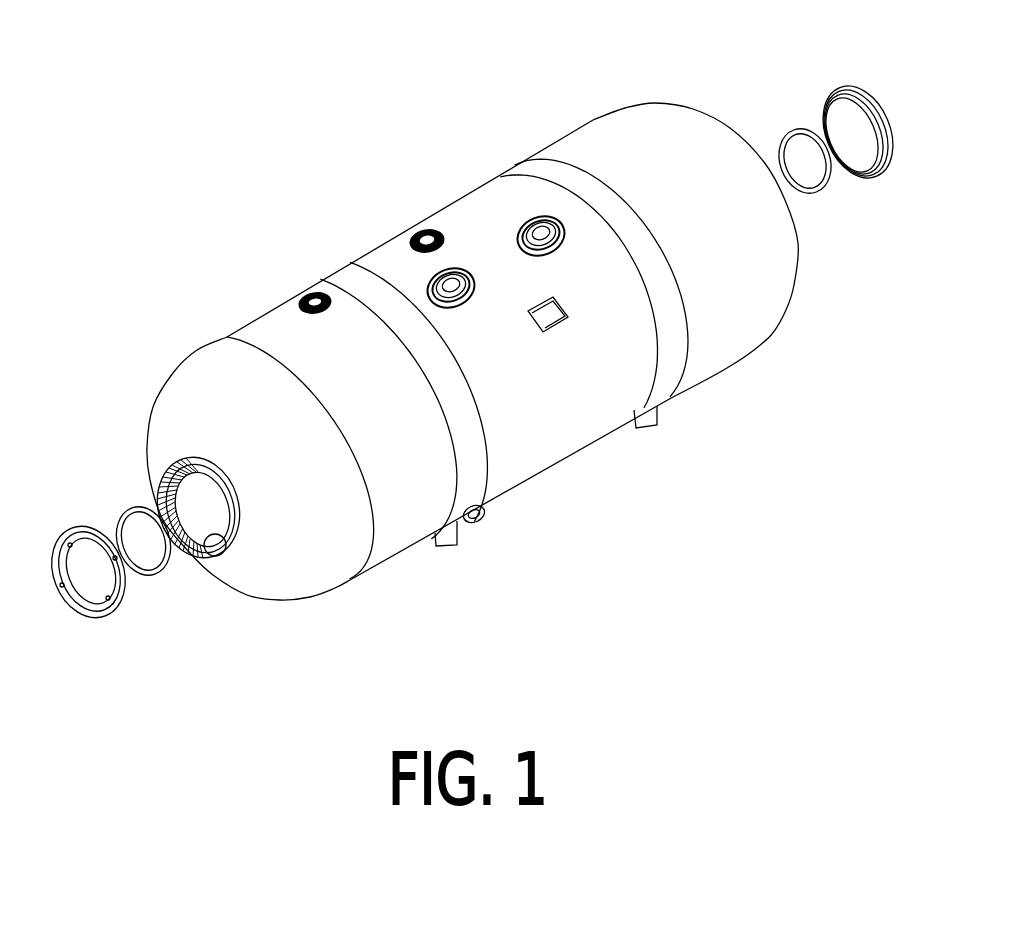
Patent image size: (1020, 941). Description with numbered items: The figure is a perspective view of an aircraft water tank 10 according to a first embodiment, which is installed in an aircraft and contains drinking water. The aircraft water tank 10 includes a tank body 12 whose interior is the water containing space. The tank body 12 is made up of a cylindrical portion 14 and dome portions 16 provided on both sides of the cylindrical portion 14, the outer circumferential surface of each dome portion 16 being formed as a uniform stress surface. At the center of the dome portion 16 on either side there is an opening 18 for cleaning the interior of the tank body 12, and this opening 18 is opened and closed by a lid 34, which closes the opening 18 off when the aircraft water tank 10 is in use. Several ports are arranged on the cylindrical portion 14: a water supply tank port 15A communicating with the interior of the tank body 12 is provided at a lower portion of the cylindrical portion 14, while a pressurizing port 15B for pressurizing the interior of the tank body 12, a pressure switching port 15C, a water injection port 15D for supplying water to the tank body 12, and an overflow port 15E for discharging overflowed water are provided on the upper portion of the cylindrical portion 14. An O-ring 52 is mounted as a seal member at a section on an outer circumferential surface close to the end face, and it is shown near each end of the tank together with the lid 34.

The aircraft water tank 10 is at (268, 171).
The tank body 12 is at (597, 135).
The cylindrical portion 14 is at (482, 243).
The water supply tank port 15A is at (484, 518).
The pressurizing port 15B is at (305, 298).
The pressure switching port 15C is at (420, 233).
The water injection port 15D is at (473, 297).
The overflow port 15E is at (530, 222).
The dome portion 16 is at (195, 402).
The opening 18 is at (200, 557).
The lid 34 is at (87, 570).
The O-ring 52 is at (147, 507).